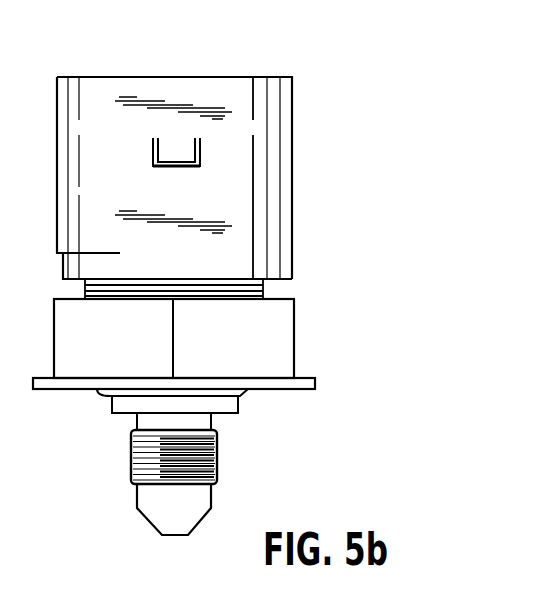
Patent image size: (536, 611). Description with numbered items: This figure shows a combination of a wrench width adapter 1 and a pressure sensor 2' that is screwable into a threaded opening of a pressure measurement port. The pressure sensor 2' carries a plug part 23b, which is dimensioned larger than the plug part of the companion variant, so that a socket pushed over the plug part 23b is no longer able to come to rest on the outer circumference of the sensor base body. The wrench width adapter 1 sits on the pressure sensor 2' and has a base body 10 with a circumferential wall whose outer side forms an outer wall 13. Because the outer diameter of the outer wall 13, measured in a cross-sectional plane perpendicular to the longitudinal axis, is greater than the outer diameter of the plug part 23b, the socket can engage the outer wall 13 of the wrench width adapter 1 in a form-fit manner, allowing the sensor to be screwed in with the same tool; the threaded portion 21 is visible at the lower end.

The pressure sensor 2' is at (232, 178).
The plug part 23b is at (207, 188).
The wrench width adapter 1 is at (315, 302).
The base body 10 is at (296, 355).
The outer wall 13 is at (118, 335).
The thread 21 is at (218, 450).